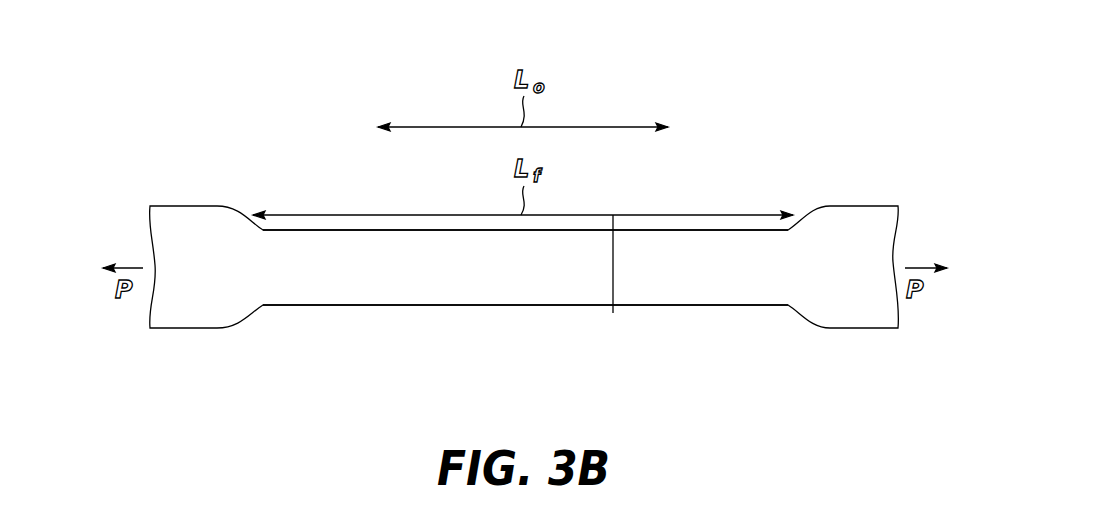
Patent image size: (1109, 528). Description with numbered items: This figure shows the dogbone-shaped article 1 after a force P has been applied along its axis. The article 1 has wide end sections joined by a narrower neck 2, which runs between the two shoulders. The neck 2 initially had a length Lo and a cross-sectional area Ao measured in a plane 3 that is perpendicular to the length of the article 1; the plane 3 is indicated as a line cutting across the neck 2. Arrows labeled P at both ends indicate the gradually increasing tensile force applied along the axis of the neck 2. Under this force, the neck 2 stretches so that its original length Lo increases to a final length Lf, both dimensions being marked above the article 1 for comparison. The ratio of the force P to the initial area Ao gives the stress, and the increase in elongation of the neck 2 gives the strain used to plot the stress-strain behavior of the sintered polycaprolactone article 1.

The dogbone-shaped article 1 is at (363, 326).
The neck 2 is at (495, 305).
The plane 3 is at (614, 312).